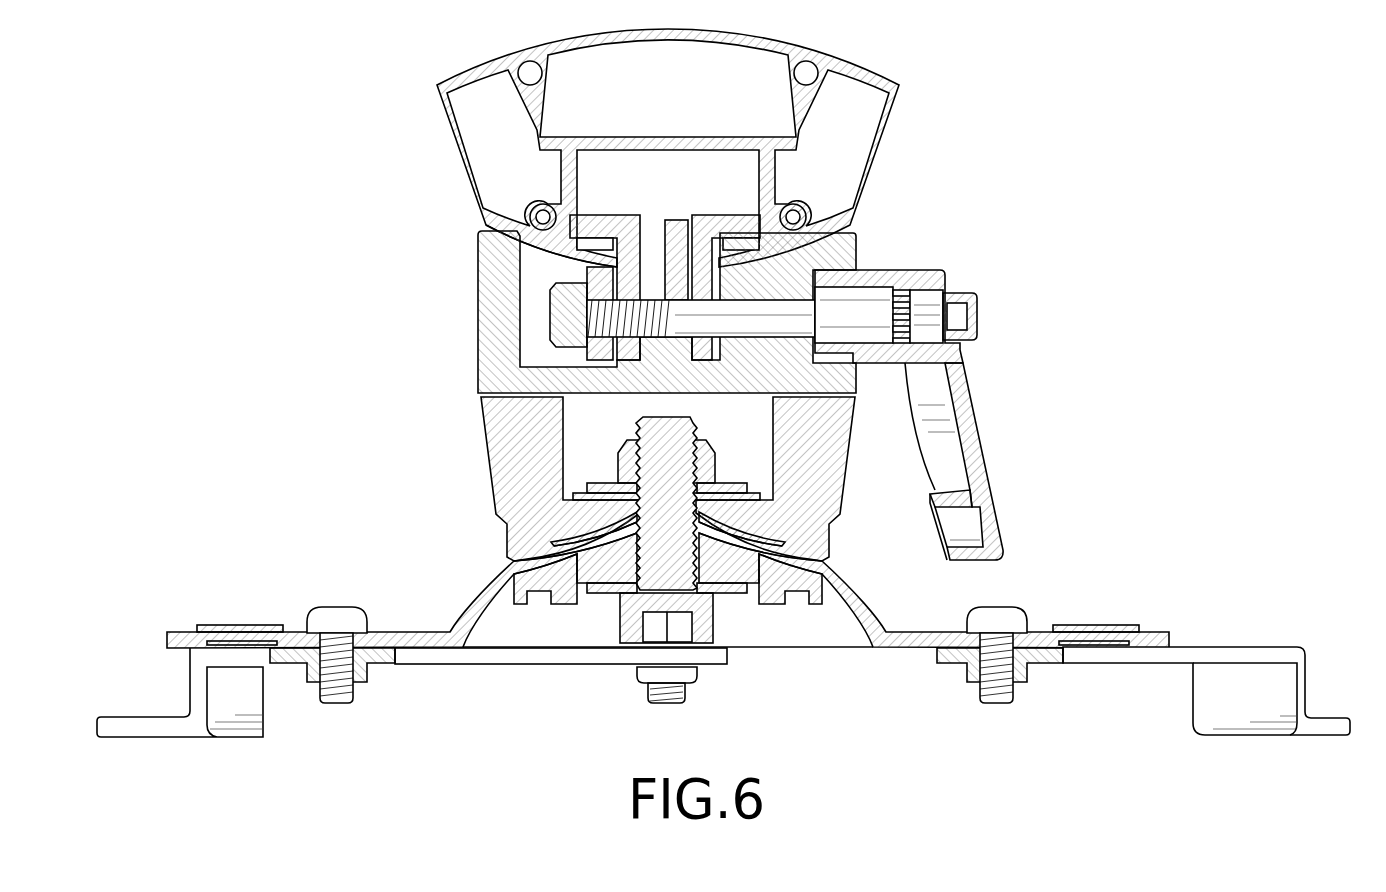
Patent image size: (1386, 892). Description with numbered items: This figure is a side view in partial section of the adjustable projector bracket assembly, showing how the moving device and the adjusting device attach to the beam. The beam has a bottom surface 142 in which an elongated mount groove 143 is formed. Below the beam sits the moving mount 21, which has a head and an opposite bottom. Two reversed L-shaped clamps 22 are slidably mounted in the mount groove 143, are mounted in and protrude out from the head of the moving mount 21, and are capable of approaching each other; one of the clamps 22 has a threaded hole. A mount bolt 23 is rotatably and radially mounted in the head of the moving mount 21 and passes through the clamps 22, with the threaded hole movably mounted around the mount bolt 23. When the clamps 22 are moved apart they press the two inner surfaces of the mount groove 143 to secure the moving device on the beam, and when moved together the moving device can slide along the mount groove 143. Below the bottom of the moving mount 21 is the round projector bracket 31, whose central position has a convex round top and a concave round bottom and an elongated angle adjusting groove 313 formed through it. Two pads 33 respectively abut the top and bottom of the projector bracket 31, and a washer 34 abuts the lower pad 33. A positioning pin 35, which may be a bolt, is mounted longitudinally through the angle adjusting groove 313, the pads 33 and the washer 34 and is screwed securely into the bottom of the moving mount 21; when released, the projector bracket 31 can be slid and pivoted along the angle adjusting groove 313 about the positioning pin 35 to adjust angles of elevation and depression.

The mount groove 143 is at (668, 152).
The bottom surface 142 is at (541, 254).
The clamps 22 is at (598, 228).
The moving mount 21 is at (448, 397).
The mount bolt 23 is at (862, 296).
The projector bracket 31 is at (470, 618).
The angle adjusting groove 313 is at (554, 546).
The pads 33 is at (790, 558).
The washer 34 is at (730, 597).
The positioning pin 35 is at (628, 630).